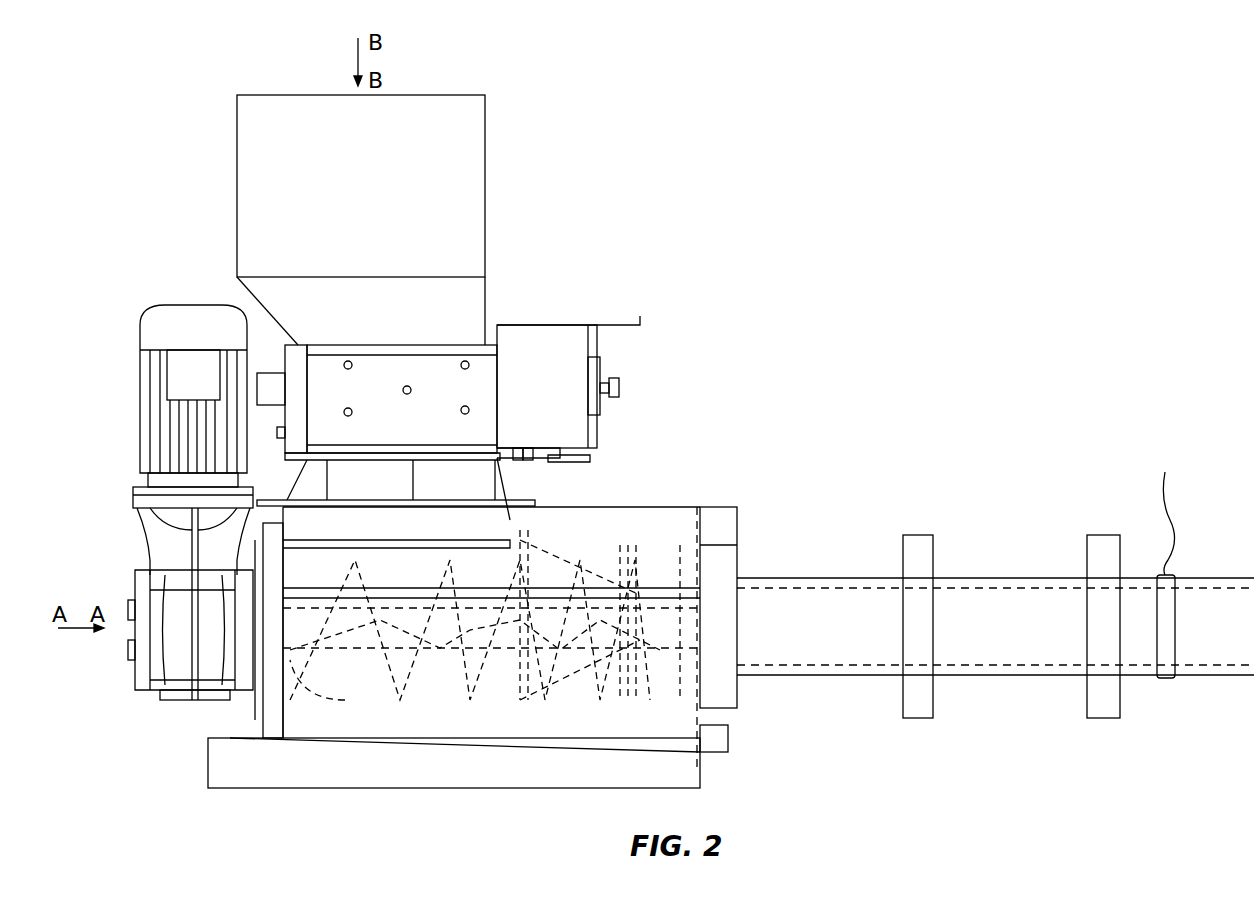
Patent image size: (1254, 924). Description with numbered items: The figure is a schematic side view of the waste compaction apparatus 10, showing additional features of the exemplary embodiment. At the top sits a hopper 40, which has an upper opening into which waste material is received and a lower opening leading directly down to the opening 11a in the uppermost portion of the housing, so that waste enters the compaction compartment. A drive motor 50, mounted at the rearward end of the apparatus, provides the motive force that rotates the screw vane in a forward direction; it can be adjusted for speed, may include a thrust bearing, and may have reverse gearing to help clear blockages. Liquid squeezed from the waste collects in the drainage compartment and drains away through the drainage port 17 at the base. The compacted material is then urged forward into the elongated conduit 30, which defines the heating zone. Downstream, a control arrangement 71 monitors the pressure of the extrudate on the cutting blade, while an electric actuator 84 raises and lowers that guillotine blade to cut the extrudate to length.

The apparatus 10 is at (690, 490).
The opening 11a is at (478, 488).
The drainage port 17 is at (728, 738).
The elongated conduit 30 is at (820, 565).
The hopper 40 is at (488, 183).
The drive motor 50 is at (125, 460).
The control arrangement 71 is at (737, 528).
The electric actuator 84 is at (1178, 463).